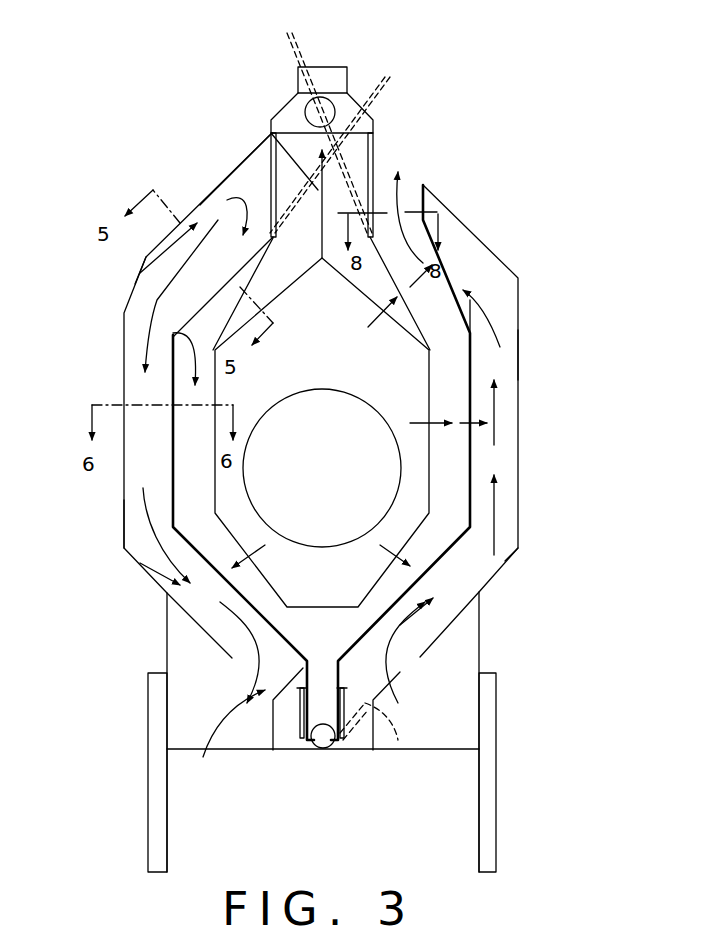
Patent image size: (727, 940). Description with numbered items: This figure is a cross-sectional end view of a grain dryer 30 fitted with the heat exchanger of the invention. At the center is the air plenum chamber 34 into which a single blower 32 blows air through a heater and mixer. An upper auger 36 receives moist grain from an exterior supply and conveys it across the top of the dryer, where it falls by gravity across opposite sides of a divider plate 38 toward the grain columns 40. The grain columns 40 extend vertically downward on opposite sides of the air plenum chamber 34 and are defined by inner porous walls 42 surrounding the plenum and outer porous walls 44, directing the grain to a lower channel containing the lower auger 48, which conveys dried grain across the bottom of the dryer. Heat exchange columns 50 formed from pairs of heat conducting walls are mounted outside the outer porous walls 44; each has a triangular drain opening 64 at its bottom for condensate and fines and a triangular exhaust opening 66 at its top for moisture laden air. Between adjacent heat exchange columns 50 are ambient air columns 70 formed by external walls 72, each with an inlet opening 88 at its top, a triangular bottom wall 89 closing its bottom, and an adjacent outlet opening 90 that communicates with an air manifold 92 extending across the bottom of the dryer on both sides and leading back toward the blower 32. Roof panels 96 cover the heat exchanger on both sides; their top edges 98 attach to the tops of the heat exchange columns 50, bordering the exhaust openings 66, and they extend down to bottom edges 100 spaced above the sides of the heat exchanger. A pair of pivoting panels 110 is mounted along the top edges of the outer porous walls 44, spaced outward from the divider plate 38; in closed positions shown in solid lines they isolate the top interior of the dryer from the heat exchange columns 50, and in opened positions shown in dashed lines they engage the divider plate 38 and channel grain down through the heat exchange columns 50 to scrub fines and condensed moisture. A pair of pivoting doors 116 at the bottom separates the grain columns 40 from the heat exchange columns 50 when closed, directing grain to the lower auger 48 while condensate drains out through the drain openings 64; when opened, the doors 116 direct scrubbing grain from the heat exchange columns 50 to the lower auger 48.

The grain dryer 30 is at (512, 222).
The blower 32 is at (355, 470).
The air plenum chamber 34 is at (412, 398).
The upper auger 36 is at (325, 78).
The divider plate 38 is at (270, 143).
The grain columns 40 is at (173, 333).
The inner porous walls 42 is at (165, 596).
The outer porous walls 44 is at (160, 627).
The lower auger 48 is at (326, 742).
The heat exchange columns 50 is at (512, 355).
The triangular drain opening 64 is at (479, 636).
The triangular exhaust opening 66 is at (410, 172).
The ambient air columns 70 is at (137, 530).
The external walls 72 is at (124, 533).
The inlet opening 88 is at (213, 205).
The triangular bottom wall 89 is at (272, 748).
The outlet opening 90 is at (225, 738).
The air manifold 92 is at (160, 657).
The roof panels 96 is at (143, 255).
The top edges 98 is at (271, 133).
The bottom edges 100 is at (138, 273).
The pivoting panels 110 is at (440, 75).
The pivoting doors 116 is at (301, 690).